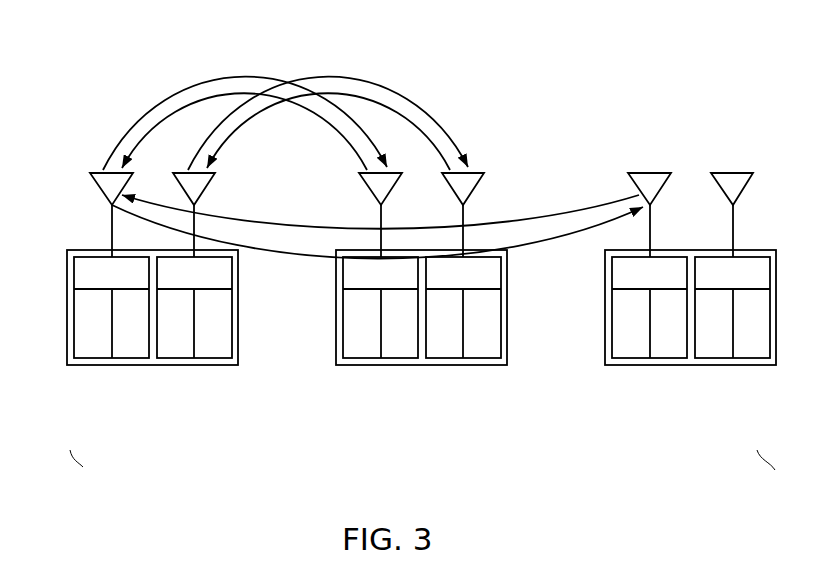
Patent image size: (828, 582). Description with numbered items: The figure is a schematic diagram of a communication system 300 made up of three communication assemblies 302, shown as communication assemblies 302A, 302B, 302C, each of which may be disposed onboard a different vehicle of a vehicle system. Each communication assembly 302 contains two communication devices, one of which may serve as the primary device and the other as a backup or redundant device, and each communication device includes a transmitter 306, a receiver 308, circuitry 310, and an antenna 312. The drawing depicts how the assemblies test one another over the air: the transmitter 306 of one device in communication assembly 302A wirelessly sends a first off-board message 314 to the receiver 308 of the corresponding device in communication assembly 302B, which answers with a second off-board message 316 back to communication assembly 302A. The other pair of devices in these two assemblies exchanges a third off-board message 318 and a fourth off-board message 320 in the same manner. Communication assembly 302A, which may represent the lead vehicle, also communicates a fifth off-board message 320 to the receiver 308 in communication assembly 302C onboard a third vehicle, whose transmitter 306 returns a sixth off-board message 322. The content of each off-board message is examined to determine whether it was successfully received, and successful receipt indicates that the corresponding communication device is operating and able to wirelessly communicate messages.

The wireless communication system 300 is at (409, 265).
The communication assembly 302 is at (163, 277).
The first communication assembly 302A is at (163, 277).
The second communication assembly 302B is at (420, 295).
The third communication assembly 302C is at (667, 295).
The transmitter 306 is at (130, 358).
The receiver 308 is at (85, 358).
The circuitry 310 is at (173, 267).
The antenna 312 is at (97, 168).
The first off-board message 314 is at (143, 116).
The second off-board message 316 is at (163, 132).
The third off-board message 318 is at (370, 78).
The fourth off-board message 320 is at (378, 107).
The sixth off-board message 322 is at (316, 222).